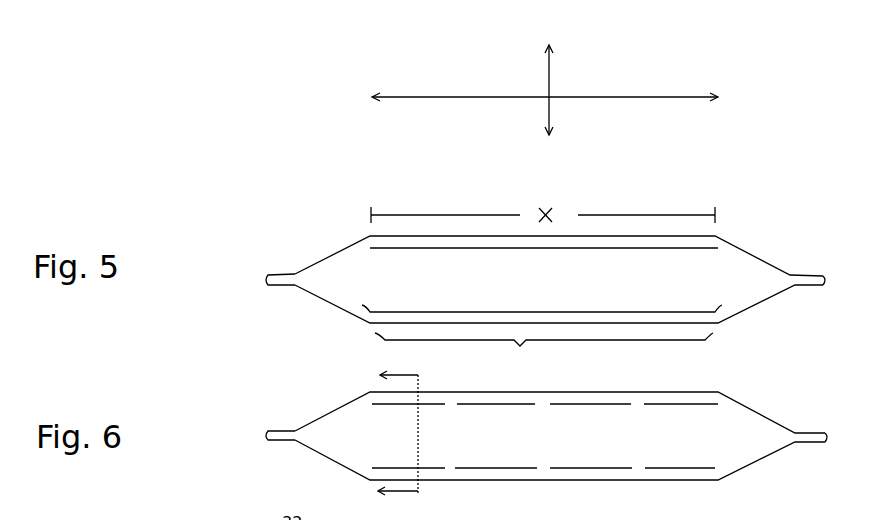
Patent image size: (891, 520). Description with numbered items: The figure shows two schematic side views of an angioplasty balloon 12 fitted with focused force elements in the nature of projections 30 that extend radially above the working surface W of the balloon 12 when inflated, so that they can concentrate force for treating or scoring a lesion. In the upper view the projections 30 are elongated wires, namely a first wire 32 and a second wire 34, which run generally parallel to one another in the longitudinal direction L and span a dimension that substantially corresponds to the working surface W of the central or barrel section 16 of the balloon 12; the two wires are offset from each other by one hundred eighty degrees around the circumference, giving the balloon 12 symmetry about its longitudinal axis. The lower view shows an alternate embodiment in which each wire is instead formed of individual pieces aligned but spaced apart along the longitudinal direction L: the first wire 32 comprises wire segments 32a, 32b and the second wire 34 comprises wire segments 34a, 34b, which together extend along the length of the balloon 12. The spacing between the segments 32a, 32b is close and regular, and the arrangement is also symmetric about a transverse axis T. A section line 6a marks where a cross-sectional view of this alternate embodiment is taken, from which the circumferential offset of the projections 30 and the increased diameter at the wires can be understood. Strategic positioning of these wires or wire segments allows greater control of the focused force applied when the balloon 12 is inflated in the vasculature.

In FIG. 5, the balloon 12 is at (738, 212).
In FIG. 6, the balloon 12 is at (546, 436).
In FIG. 5, the central or barrel section 16 is at (556, 297).
In FIG. 5, the projections 30 is at (393, 198).
In FIG. 5, the first wire 32 is at (725, 242).
In FIG. 5, the second wire 34 is at (365, 306).
In FIG. 6, the wire segment 32a is at (625, 402).
In FIG. 6, the wire segment 32b is at (730, 401).
In FIG. 6, the wire segment 34a is at (620, 468).
In FIG. 6, the wire segment 34b is at (723, 481).
In FIG. 6, the cross-sectional view line 6a is at (398, 436).
In FIG. 5, the transverse axis T is at (553, 60).
In FIG. 5, the longitudinal direction L is at (663, 96).
In FIG. 5, the working surface W is at (544, 354).